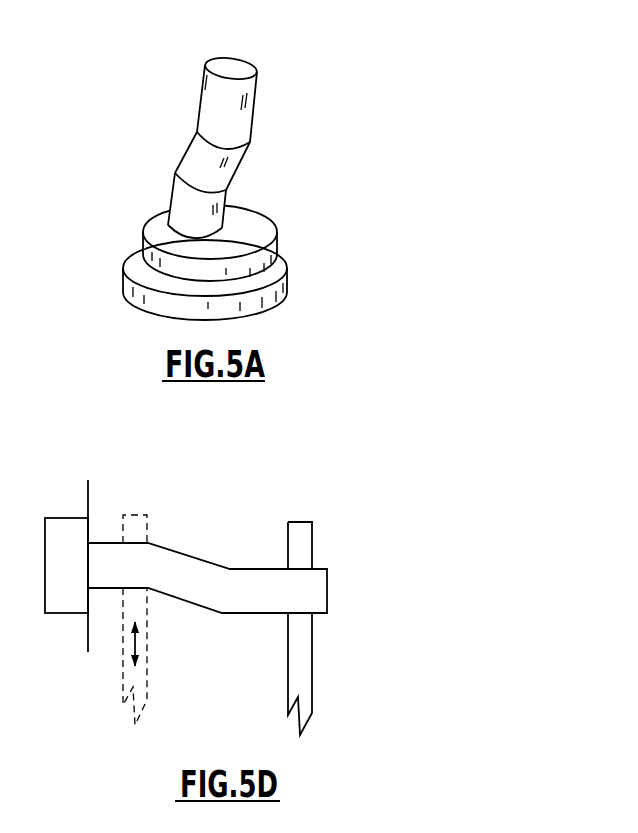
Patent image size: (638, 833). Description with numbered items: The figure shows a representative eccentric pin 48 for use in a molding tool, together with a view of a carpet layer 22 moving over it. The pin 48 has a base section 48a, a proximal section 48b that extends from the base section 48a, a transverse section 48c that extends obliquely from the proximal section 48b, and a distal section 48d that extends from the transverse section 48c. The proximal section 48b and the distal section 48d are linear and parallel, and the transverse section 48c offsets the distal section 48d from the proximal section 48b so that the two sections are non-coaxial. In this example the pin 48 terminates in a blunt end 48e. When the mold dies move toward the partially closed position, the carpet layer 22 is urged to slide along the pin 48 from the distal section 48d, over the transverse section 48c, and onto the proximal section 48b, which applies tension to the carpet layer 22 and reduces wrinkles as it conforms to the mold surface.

In FIG. 5A, the pin 48 is at (201, 162).
In FIG. 5D, the pin 48 is at (221, 605).
In FIG. 5A, the base section 48a is at (287, 284).
In FIG. 5A, the proximal section 48b is at (165, 170).
In FIG. 5D, the proximal section 48b is at (107, 555).
In FIG. 5A, the transverse section 48c is at (265, 143).
In FIG. 5D, the transverse section 48c is at (212, 577).
In FIG. 5A, the distal section 48d is at (275, 67).
In FIG. 5D, the distal section 48d is at (313, 585).
In FIG. 5A, the blunt end 48e is at (234, 63).
In FIG. 5D, the carpet layer 22 is at (149, 527).